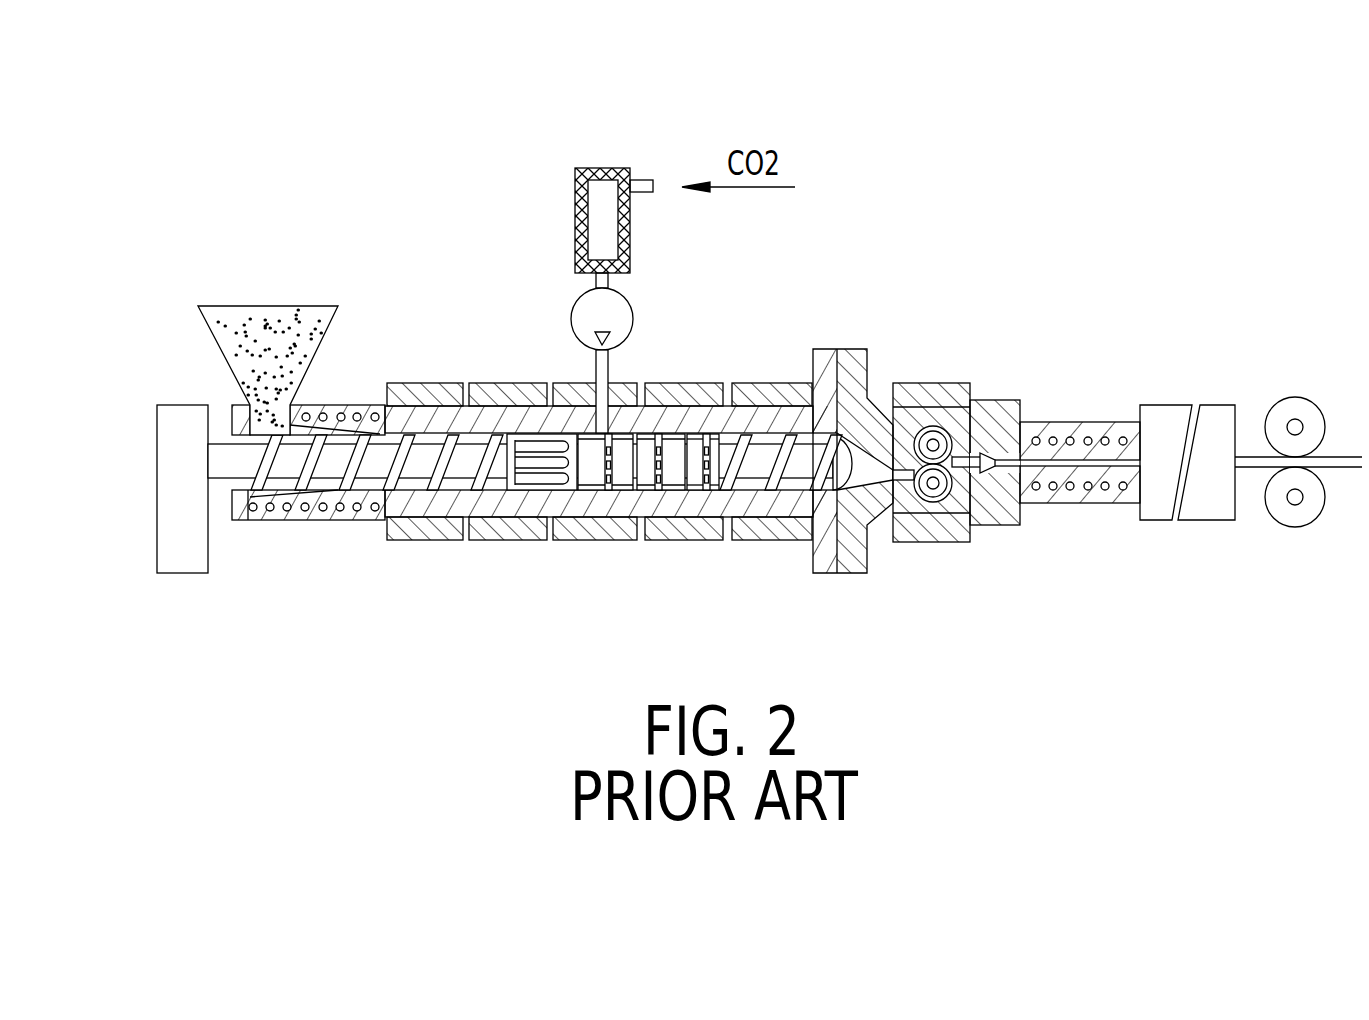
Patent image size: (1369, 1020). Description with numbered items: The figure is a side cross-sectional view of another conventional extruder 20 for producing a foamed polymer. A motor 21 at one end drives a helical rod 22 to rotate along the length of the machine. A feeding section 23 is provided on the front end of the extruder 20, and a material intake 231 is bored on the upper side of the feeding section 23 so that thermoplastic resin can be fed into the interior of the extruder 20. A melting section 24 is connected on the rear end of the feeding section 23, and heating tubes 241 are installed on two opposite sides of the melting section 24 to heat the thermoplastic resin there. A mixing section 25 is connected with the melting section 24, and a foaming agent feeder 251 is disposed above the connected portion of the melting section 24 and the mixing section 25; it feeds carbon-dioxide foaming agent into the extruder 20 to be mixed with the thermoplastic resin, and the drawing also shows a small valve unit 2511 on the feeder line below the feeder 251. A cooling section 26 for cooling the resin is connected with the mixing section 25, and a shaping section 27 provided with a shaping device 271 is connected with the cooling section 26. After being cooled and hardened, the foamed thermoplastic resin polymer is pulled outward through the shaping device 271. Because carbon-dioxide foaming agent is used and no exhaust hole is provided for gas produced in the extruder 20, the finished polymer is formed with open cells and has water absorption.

The extruder 20 is at (210, 168).
The motor 21 is at (157, 485).
The helical rod 22 is at (217, 478).
The feeding section 23 is at (332, 500).
The material intake 231 is at (293, 313).
The melting section 24 is at (507, 540).
The heating tubes 241 is at (492, 417).
The mixing section 25 is at (673, 540).
The foaming agent feeder 251 is at (603, 168).
The control valve 2511 is at (633, 318).
The cooling section 26 is at (765, 540).
The shaping section 27 is at (935, 542).
The shaping device 271 is at (940, 383).